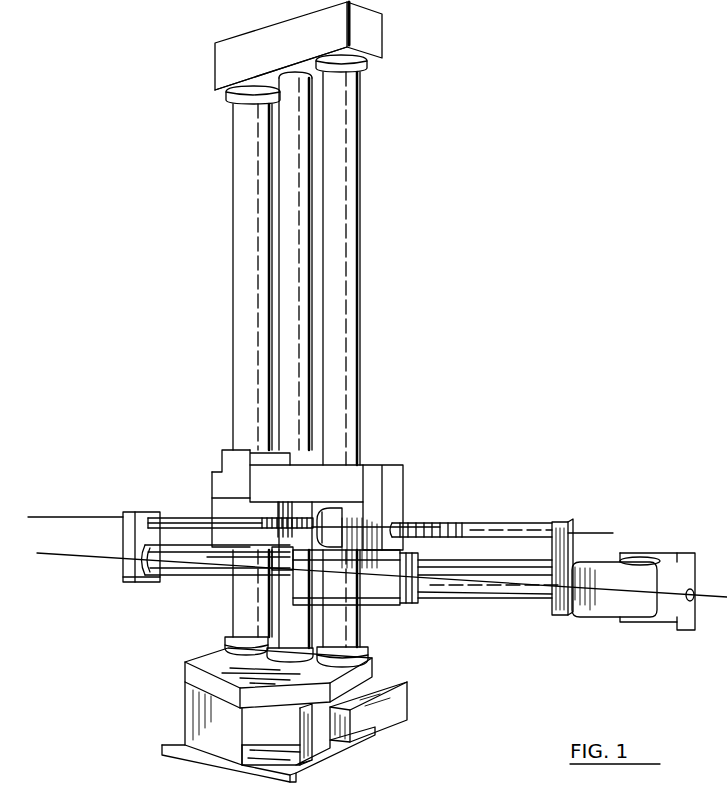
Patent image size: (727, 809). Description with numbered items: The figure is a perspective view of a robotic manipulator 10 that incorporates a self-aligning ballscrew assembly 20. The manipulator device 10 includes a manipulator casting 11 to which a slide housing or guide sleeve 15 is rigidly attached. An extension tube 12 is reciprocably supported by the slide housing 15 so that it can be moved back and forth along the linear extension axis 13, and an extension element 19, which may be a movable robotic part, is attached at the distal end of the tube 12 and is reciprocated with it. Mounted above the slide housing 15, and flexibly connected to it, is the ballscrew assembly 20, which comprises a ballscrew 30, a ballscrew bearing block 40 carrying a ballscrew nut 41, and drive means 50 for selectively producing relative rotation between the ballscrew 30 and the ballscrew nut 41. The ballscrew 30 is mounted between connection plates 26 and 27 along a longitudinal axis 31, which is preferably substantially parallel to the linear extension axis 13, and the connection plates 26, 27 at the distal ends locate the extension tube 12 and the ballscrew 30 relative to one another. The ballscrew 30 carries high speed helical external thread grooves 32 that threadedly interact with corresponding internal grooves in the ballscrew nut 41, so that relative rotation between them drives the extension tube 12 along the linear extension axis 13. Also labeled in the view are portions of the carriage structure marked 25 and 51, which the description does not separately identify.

The robotic manipulator 10 is at (93, 335).
The manipulator casting 11 is at (222, 478).
The extension tube 12 is at (488, 600).
The linear extension axis 13 is at (53, 552).
The slide housing 15 is at (383, 593).
The extension element 19 is at (612, 600).
The self-aligning ballscrew assembly 20 is at (283, 515).
The block face 25 is at (403, 512).
The connection plate 26 is at (587, 523).
The connection plate 27 is at (137, 508).
The ballscrew 30 is at (540, 520).
The longitudinal axis 31 is at (40, 517).
The helical external thread grooves 32 is at (462, 523).
The ballscrew bearing block 40 is at (398, 505).
The ballscrew nut 41 is at (365, 512).
The drive means 50 is at (412, 452).
The top plate 51 is at (340, 472).